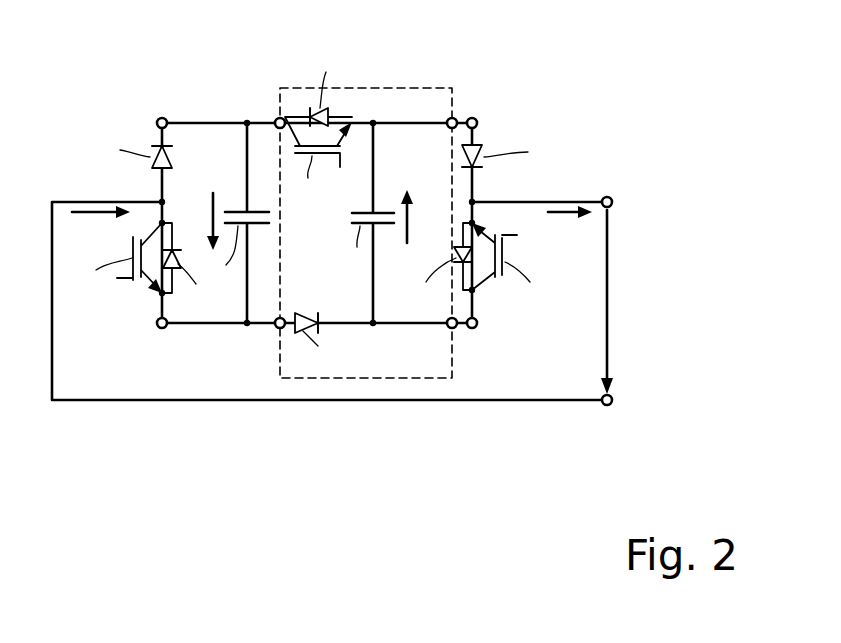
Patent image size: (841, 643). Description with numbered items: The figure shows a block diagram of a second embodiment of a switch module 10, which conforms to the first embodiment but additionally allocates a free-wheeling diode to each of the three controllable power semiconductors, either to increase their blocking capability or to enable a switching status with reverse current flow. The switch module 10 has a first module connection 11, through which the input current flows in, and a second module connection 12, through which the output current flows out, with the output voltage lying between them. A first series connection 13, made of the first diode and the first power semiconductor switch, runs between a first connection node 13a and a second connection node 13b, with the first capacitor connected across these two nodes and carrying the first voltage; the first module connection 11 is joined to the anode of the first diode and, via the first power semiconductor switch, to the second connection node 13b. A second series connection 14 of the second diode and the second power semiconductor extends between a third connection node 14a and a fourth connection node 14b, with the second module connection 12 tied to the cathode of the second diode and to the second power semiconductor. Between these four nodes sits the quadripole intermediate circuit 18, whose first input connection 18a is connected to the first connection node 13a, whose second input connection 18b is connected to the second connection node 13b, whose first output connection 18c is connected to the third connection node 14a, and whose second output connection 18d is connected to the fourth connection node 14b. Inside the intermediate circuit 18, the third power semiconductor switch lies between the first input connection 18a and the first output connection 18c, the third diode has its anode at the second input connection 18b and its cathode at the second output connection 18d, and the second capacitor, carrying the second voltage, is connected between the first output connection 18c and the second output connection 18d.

The switch module 10 is at (578, 86).
The first module connection 11 is at (613, 400).
The second module connection 12 is at (613, 202).
The first series connection 13 is at (166, 100).
The first connection node 13a is at (160, 118).
The second connection node 13b is at (160, 329).
The second series connection 14 is at (494, 100).
The third connection node 14a is at (478, 122).
The fourth connection node 14b is at (478, 326).
The intermediate circuit 18 is at (385, 88).
The first input connection 18a is at (276, 118).
The second input connection 18b is at (276, 328).
The first output connection 18c is at (456, 117).
The second output connection 18d is at (458, 329).